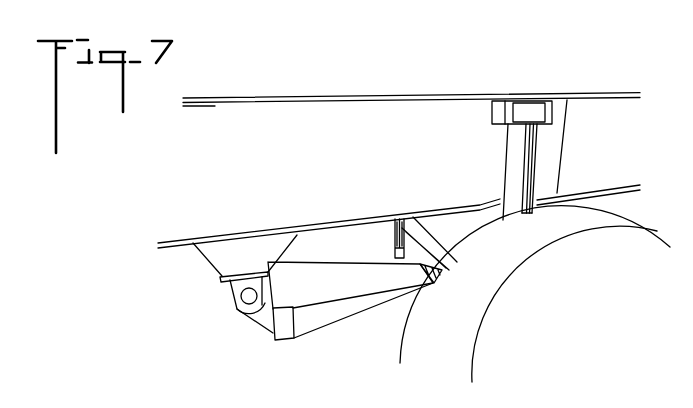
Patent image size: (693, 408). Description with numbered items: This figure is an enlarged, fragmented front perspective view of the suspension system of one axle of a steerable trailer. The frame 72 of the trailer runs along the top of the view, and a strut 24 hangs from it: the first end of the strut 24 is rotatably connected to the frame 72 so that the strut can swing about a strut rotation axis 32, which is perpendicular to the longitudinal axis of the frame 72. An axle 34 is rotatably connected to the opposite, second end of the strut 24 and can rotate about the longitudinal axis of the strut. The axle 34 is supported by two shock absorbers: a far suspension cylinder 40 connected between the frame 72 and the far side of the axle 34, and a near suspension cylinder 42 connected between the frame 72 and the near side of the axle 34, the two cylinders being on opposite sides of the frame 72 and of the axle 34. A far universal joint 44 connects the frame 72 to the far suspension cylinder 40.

The frame 72 is at (448, 95).
The far universal joint 44 is at (535, 113).
The far suspension cylinder 40 is at (502, 180).
The near suspension cylinder 42 is at (392, 242).
The axle 34 is at (438, 243).
The strut rotation axis 32 is at (250, 298).
The strut 24 is at (355, 307).